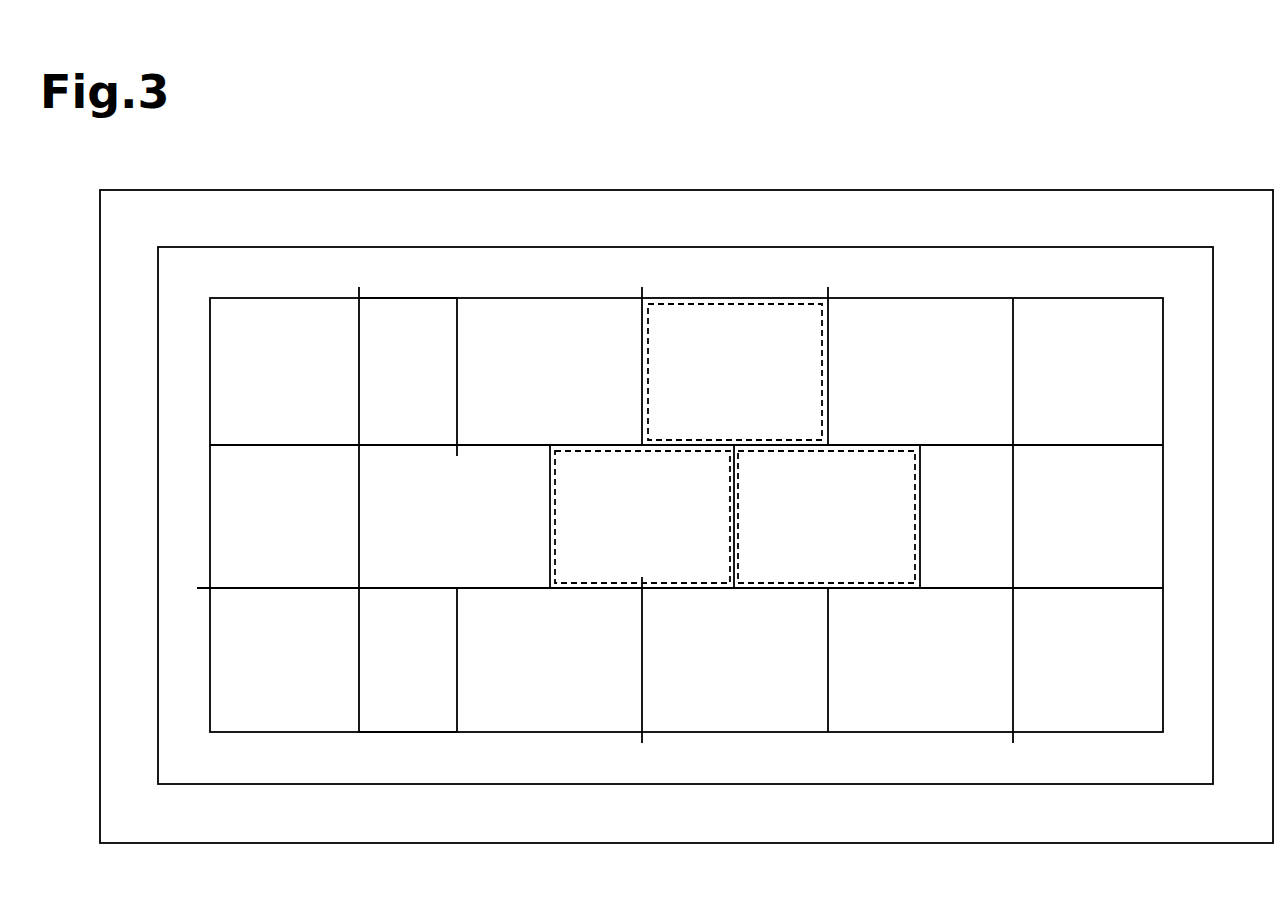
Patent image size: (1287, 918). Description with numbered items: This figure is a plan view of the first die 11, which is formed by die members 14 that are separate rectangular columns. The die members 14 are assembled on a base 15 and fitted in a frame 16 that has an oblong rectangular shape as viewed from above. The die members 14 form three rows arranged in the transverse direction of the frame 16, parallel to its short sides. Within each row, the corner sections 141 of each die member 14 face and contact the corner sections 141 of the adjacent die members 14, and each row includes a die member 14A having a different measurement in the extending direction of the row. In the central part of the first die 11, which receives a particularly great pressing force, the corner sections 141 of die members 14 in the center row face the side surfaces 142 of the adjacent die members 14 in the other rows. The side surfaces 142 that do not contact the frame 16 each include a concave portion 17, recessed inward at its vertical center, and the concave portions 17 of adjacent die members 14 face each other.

The first die 11 is at (513, 298).
The die member 14 is at (366, 312).
The die member having a different measurement 14A is at (423, 310).
The corner section 141 is at (649, 312).
The side surface 142 is at (403, 445).
The base 15 is at (1088, 202).
The frame 16 is at (1088, 263).
The concave portion 17 is at (738, 304).